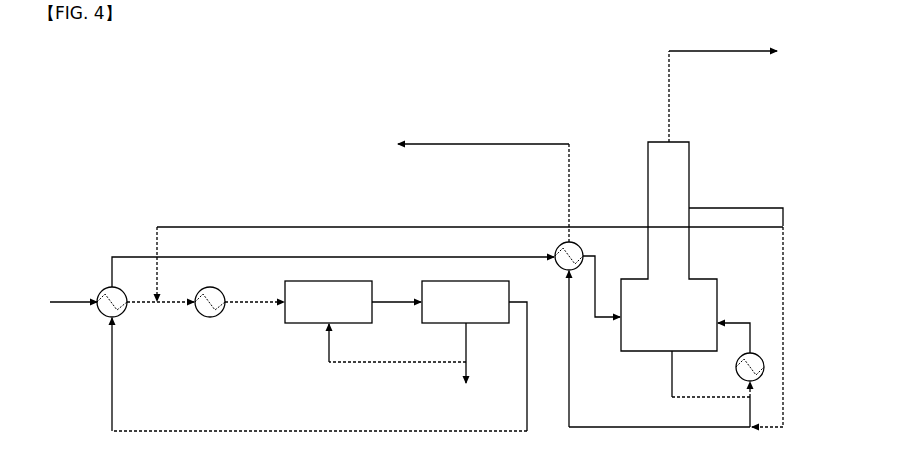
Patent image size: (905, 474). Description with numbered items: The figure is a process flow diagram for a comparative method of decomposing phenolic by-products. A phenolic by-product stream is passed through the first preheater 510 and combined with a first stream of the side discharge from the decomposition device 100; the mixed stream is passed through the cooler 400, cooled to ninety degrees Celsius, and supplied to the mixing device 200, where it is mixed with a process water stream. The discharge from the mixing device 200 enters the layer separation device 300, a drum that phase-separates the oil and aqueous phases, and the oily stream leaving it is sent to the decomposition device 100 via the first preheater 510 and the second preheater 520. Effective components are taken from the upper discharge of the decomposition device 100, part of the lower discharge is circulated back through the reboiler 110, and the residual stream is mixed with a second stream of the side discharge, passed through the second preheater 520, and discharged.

The decomposition device 100 is at (470, 239).
The reboiler 110 is at (762, 354).
The mixing device 200 is at (345, 321).
The layer separation device 300 is at (449, 356).
The cooler 400 is at (210, 287).
The first preheater 510 is at (100, 290).
The second preheater 520 is at (556, 245).